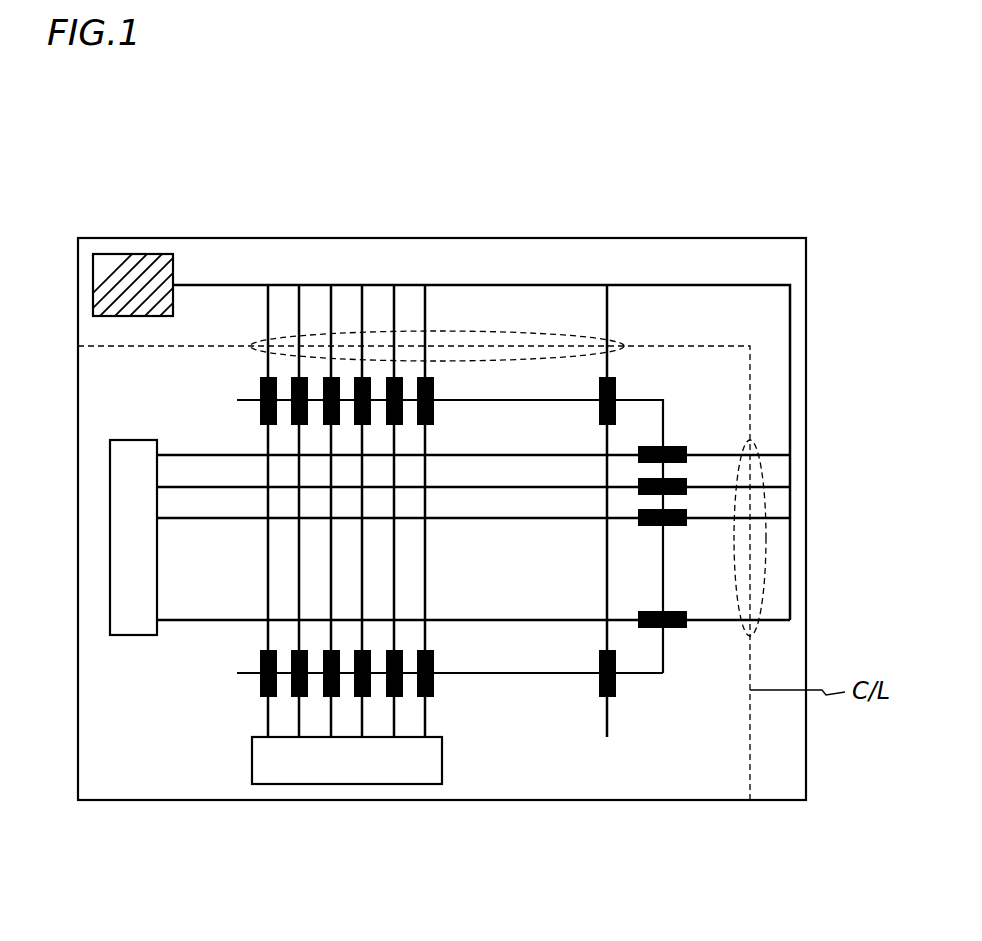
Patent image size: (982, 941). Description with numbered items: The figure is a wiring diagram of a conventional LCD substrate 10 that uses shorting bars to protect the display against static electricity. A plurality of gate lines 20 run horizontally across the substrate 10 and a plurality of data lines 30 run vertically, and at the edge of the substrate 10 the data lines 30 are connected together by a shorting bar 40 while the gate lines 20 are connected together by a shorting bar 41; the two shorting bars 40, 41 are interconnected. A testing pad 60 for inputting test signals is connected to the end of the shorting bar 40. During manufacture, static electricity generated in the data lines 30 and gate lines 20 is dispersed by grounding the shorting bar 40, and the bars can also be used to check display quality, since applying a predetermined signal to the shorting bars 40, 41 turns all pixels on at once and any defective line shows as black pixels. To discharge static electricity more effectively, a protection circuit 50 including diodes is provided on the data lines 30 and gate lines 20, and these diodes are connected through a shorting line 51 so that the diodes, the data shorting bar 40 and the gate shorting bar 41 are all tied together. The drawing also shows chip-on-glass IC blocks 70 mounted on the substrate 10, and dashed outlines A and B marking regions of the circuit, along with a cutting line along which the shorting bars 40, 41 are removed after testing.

The substrate 10 is at (420, 519).
The gate lines 20 is at (473, 453).
The data lines 30 is at (396, 511).
The shorting bar 40 is at (481, 379).
The shorting bar 41 is at (528, 582).
The protection circuit 50 is at (467, 517).
The shorting line 51 is at (450, 702).
The testing pad 60 is at (146, 239).
The COG IC 70 is at (276, 612).
The cutting region A is at (437, 257).
The cutting region B is at (789, 491).